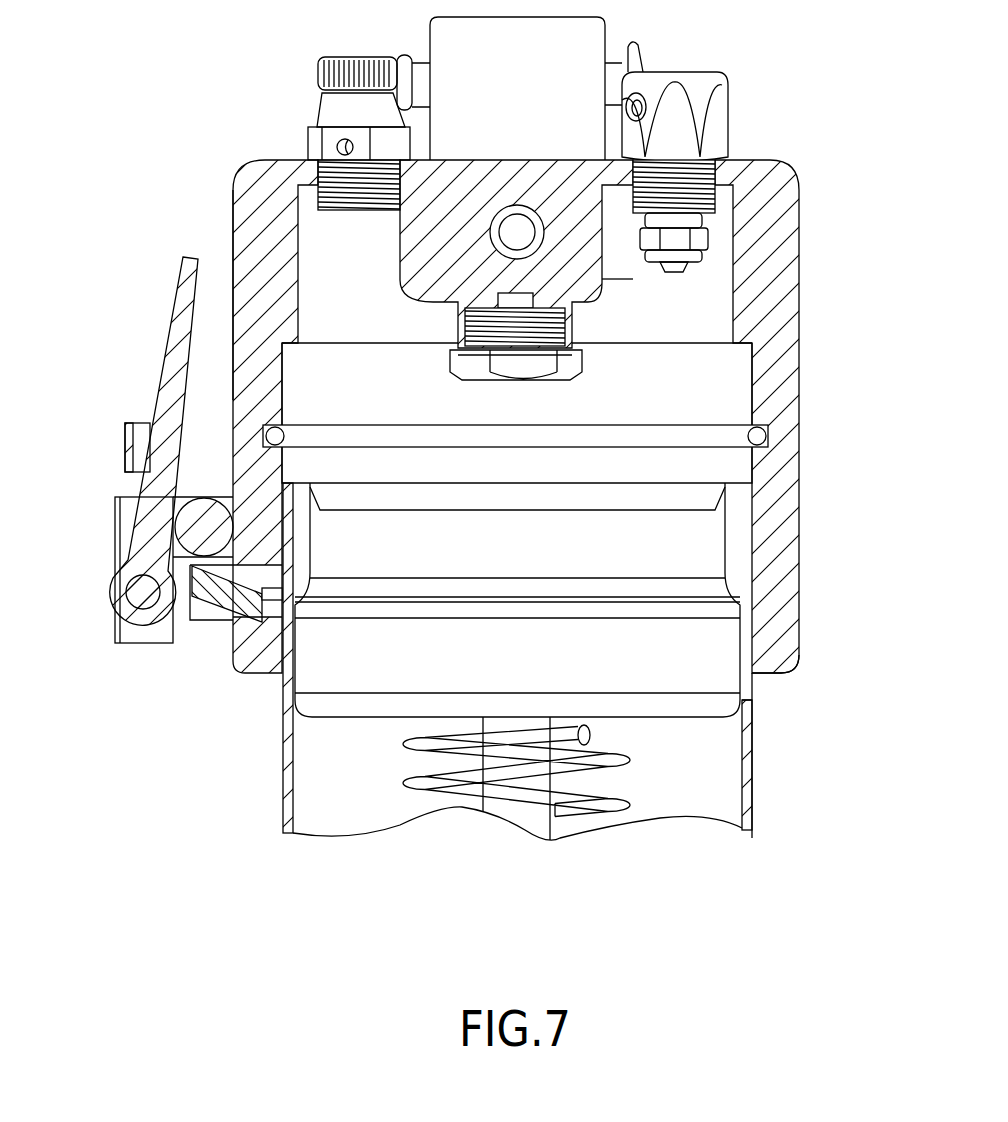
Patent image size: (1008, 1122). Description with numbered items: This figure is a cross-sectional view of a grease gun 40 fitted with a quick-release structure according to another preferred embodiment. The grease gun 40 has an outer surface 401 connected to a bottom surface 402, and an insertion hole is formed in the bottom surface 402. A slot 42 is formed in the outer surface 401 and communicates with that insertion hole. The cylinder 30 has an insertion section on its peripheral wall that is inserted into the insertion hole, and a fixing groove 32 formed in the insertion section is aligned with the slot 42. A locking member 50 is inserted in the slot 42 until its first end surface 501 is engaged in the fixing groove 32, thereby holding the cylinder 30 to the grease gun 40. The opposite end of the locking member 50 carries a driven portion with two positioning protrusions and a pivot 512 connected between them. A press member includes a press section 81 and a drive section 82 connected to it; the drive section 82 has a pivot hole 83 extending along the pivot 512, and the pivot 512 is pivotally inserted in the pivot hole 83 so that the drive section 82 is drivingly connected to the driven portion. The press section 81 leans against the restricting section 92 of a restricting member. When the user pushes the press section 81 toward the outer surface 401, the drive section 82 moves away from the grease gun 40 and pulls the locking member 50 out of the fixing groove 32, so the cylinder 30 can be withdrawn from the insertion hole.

The grease gun 40 is at (772, 138).
The outer surface 401 is at (232, 238).
The bottom surface 402 is at (785, 675).
The slot 42 is at (712, 390).
The fixing groove 32 is at (753, 720).
The cylinder 30 is at (287, 780).
The press section 81 is at (185, 285).
The drive section 82 is at (122, 588).
The pivot hole 83 is at (141, 596).
The restricting section 92 is at (127, 440).
The pivot 512 is at (158, 615).
The locking member 50 is at (222, 598).
The first end surface 501 is at (273, 600).